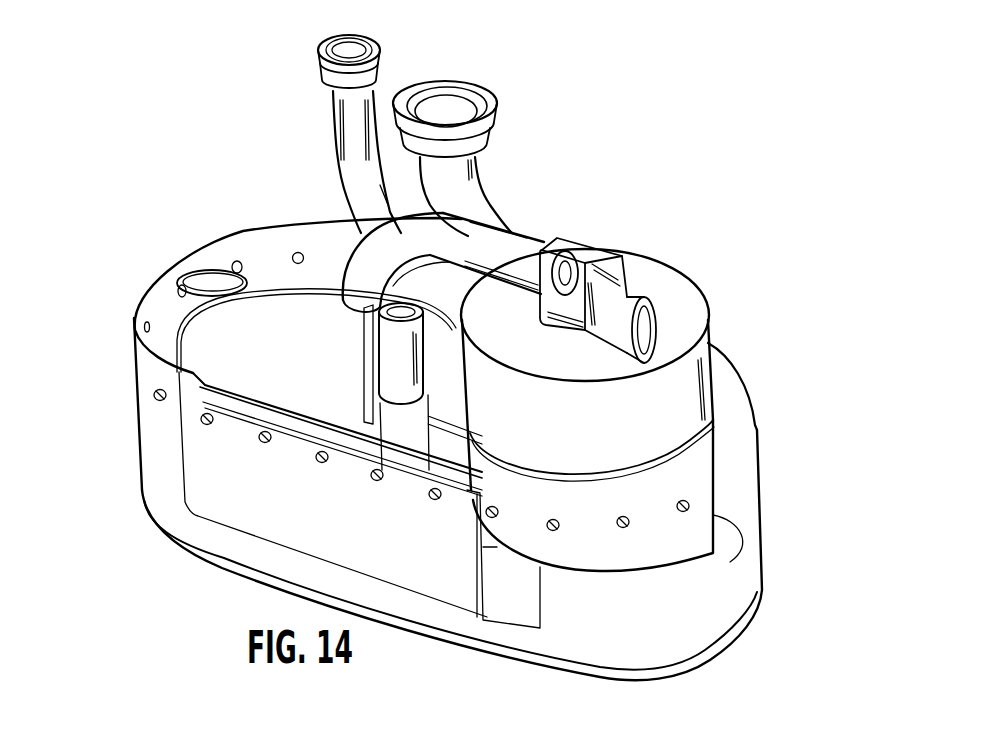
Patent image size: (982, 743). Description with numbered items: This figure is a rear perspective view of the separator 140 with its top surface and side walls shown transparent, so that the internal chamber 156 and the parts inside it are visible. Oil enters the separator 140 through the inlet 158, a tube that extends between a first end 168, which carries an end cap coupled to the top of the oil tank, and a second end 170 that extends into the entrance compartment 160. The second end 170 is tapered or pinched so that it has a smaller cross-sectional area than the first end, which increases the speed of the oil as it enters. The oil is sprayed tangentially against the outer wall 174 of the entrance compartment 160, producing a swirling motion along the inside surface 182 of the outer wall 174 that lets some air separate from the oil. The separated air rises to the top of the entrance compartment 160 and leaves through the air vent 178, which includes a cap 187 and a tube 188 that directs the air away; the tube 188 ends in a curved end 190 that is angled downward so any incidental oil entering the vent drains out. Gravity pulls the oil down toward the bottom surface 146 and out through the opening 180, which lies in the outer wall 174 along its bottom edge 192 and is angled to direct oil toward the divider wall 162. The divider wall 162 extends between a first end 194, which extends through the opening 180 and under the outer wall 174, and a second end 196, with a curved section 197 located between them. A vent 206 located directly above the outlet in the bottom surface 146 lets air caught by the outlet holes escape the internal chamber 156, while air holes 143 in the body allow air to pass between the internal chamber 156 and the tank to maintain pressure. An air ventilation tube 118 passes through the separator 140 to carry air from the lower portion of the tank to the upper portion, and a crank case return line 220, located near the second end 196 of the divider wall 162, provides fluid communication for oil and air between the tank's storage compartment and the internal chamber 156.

The air ventilation tube 118 is at (393, 358).
The separator 140 is at (845, 352).
The air holes 143 is at (377, 482).
The bottom surface 146 is at (685, 667).
The internal chamber 156 is at (258, 320).
The inlet 158 is at (505, 157).
The entrance compartment 160 is at (722, 318).
The divider wall 162 is at (172, 423).
The first end 168 is at (497, 100).
The second end 170 is at (643, 345).
The outer wall 174 is at (690, 380).
The air vent 178 is at (578, 222).
The opening 180 is at (695, 585).
The inside surface 182 is at (697, 316).
The cap 187 is at (608, 273).
The tube 188 is at (513, 247).
The curved end 190 is at (360, 263).
The bottom edge 192 is at (712, 557).
The first end 194 is at (513, 597).
The second end 196 is at (322, 333).
The curved section 197 is at (175, 285).
The vent 206 is at (203, 268).
The crank case return line 220 is at (333, 107).